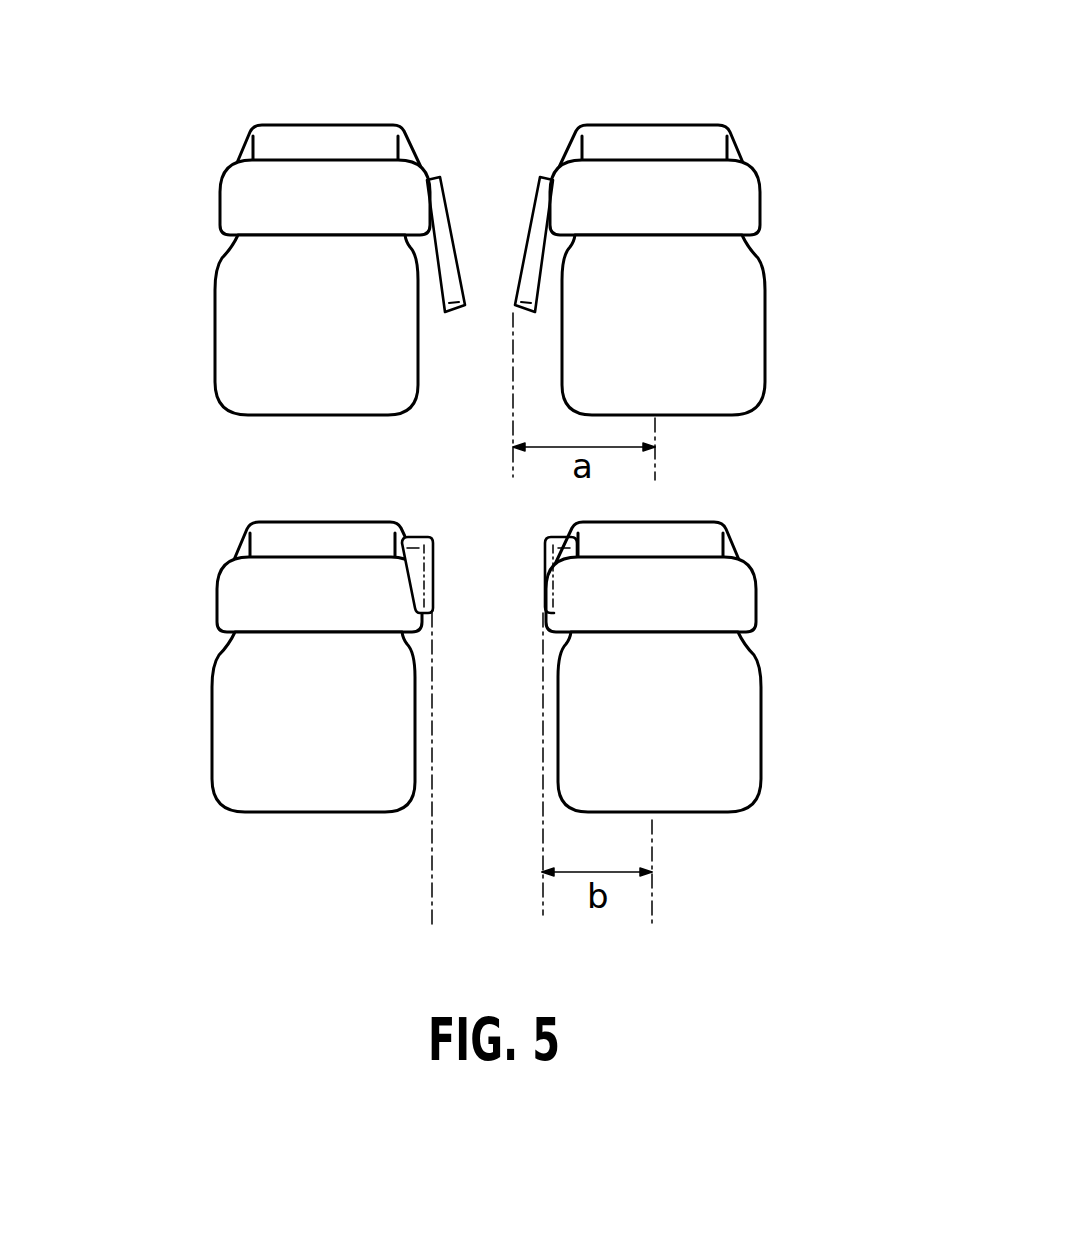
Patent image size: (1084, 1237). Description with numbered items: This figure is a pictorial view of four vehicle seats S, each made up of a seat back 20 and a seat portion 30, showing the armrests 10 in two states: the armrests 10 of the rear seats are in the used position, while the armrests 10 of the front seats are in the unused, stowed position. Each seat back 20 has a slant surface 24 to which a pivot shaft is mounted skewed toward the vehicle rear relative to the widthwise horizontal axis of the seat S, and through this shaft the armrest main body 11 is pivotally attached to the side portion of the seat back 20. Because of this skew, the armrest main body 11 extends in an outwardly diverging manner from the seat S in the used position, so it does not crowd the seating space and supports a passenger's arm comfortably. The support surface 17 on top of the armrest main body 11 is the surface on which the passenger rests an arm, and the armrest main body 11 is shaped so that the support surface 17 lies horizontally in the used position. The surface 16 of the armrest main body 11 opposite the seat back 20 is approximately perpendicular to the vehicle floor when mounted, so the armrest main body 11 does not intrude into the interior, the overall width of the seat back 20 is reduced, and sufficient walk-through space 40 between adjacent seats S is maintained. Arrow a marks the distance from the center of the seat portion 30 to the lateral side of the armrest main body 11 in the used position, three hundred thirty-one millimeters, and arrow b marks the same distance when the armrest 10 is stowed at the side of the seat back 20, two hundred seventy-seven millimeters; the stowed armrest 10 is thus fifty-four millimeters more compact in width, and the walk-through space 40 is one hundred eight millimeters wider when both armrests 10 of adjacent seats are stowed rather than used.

The armrest 10 is at (562, 535).
The armrest main body 11 is at (535, 223).
The surface opposite the seat back 16 is at (540, 580).
The support surface 17 is at (515, 290).
The seat back 20 is at (223, 205).
The slant surface 24 is at (577, 157).
The seat portion 30 is at (215, 343).
The walk-through space 40 is at (462, 813).
The seat S is at (487, 406).